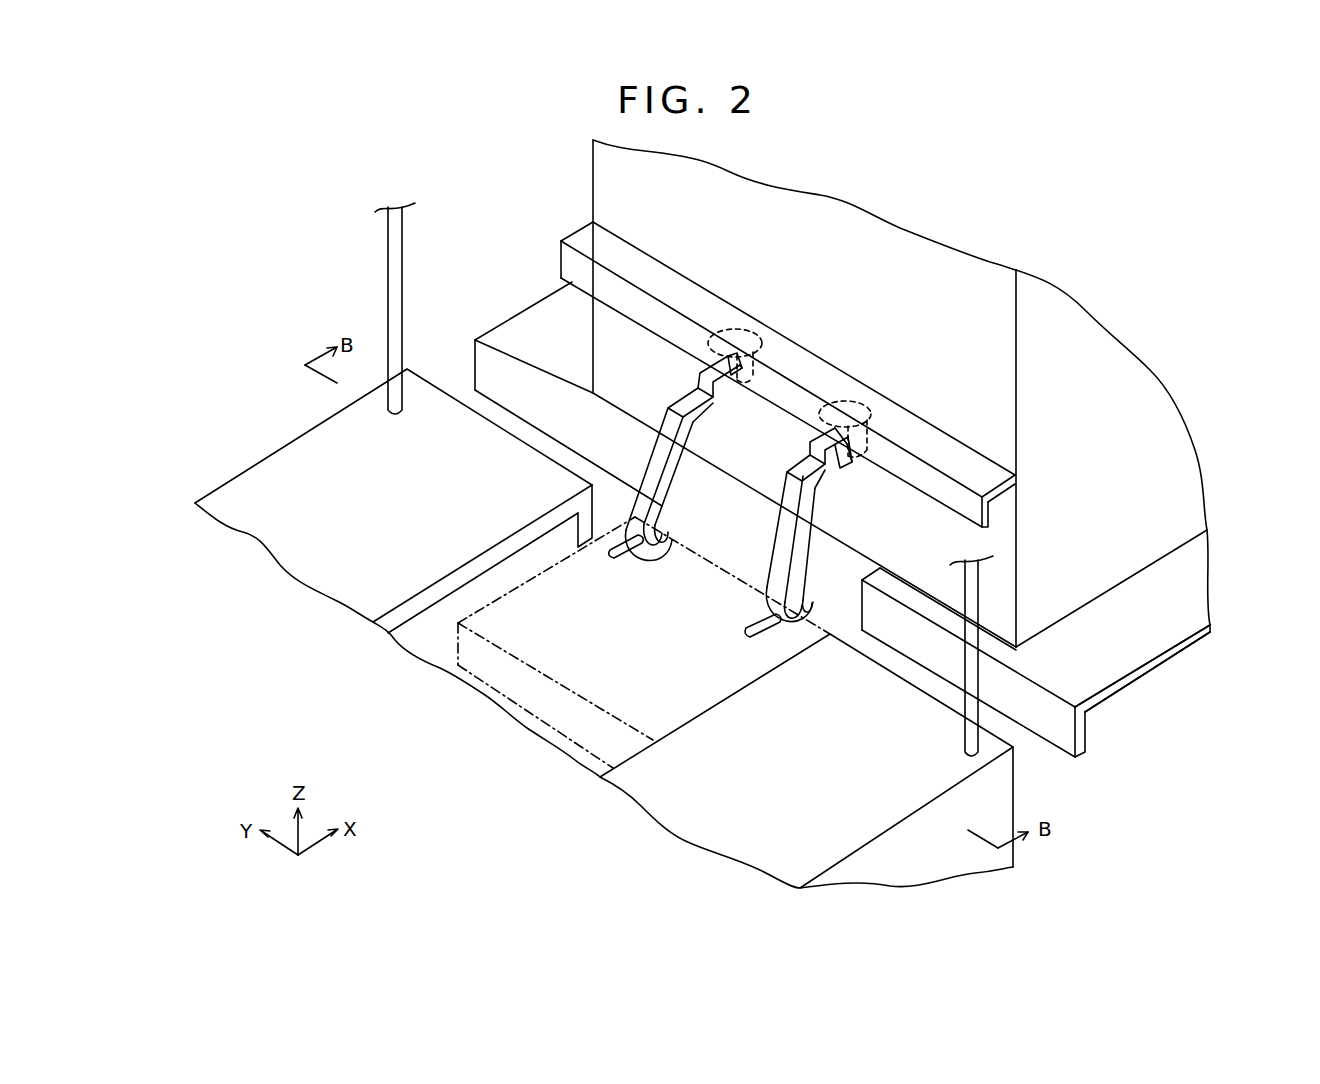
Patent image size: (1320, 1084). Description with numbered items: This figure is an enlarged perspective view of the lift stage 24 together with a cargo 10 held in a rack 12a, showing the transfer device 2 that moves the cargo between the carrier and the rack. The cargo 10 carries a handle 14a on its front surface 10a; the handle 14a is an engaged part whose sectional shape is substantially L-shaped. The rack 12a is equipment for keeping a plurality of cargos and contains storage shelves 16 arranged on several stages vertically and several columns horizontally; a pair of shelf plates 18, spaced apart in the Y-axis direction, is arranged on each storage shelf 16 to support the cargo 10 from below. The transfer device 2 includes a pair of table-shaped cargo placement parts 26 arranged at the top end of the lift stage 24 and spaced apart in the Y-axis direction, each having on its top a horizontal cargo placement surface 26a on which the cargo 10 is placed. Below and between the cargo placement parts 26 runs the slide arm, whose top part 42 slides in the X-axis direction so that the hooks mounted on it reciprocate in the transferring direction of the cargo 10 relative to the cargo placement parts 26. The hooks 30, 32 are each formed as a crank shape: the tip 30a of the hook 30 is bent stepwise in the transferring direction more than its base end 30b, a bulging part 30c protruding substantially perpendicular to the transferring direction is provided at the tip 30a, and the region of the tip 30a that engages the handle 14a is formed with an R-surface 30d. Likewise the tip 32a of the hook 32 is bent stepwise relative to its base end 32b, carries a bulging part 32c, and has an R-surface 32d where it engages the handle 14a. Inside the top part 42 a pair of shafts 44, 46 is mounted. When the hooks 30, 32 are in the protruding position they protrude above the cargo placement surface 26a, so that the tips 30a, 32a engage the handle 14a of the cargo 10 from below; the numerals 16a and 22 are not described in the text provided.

The transfer device 2 is at (453, 662).
The cargo 10 is at (597, 161).
The front surface 10a is at (614, 190).
The rack 12a is at (1205, 657).
The handle 14a is at (583, 264).
The storage shelf 16 is at (1150, 647).
The base plate upper surface 16a is at (1147, 672).
The shelf plate 18 is at (513, 348).
The positioning pin 22 is at (390, 254).
The lift stage 24 is at (278, 447).
The cargo placement part 26 is at (243, 485).
The cargo placement surface 26a is at (270, 537).
The hook 30 is at (692, 479).
The tip of the hook 30a is at (707, 360).
The base end of the hook 30b is at (647, 553).
The bulging part 30c is at (737, 384).
The R-surface 30d is at (747, 320).
The hook 32 is at (797, 525).
The tip of the hook 32a is at (823, 433).
The base end of the hook 32b is at (772, 617).
The bulging part 32c is at (867, 453).
The R-surface 32d is at (858, 388).
The top part 42 is at (587, 688).
The shaft 44 is at (624, 555).
The shaft 46 is at (760, 643).